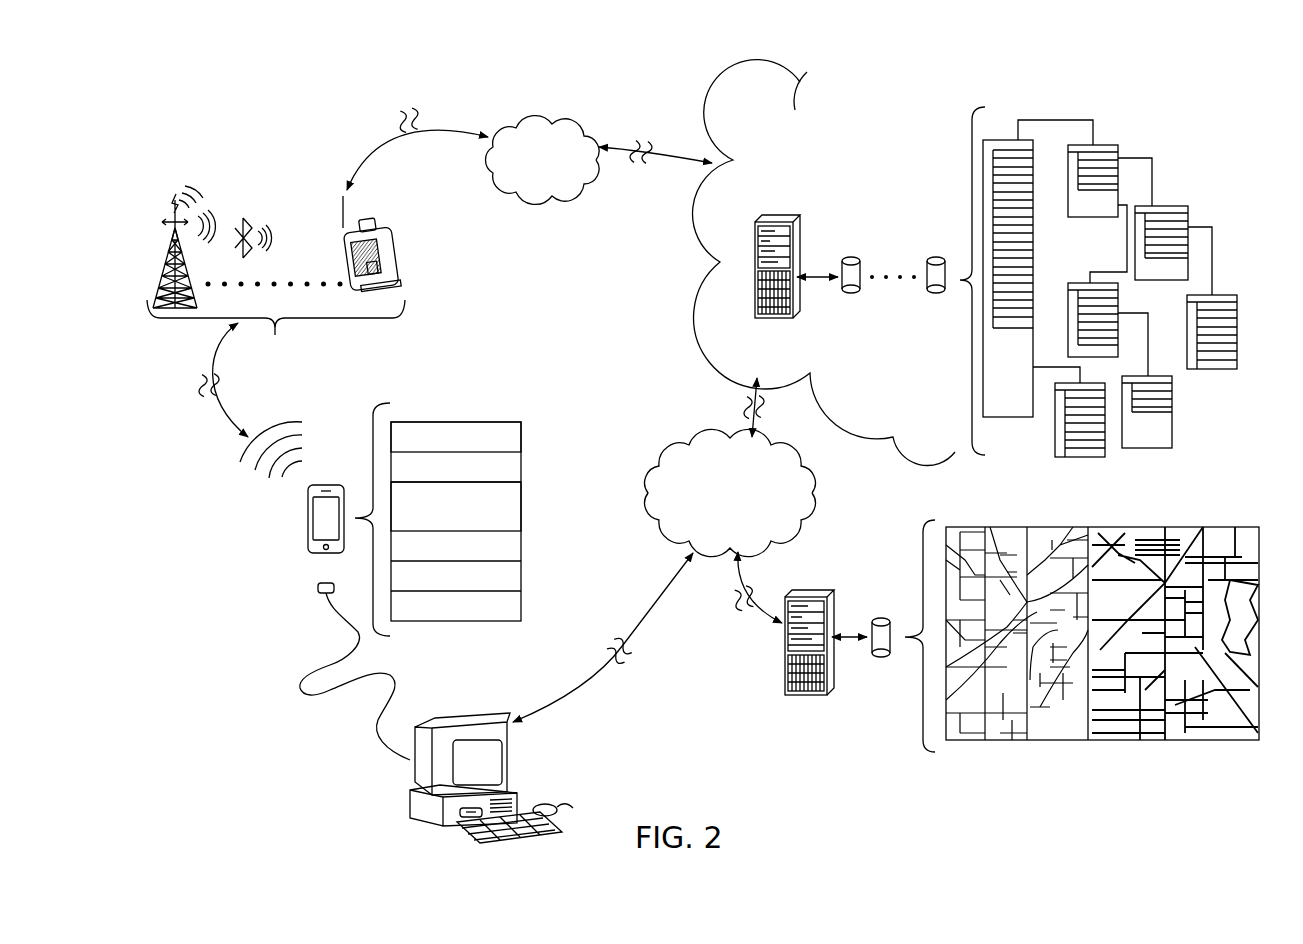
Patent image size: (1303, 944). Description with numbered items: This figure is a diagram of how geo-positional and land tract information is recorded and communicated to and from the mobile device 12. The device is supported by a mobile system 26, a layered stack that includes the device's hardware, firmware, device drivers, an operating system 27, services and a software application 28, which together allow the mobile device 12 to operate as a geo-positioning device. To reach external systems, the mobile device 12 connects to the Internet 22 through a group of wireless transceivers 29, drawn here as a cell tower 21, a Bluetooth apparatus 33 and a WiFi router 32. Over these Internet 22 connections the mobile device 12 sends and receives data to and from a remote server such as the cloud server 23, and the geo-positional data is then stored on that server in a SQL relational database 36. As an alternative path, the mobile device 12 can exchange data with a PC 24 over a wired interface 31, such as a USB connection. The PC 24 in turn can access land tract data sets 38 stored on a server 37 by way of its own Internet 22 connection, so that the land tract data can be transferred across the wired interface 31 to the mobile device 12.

The mobile device 12 is at (305, 525).
The cell tower 21 is at (163, 262).
The Internet 22 is at (543, 197).
The cloud server 23 is at (692, 238).
The PC 24 is at (406, 768).
The mobile system 26 is at (483, 519).
The operating system 27 is at (516, 512).
The software application 28 is at (516, 440).
The wireless transceivers 29 is at (138, 289).
The wired interface 31 is at (313, 672).
The WiFi router 32 is at (398, 252).
The Bluetooth apparatus 33 is at (247, 218).
The SQL relational database 36 is at (940, 149).
The server 37 is at (782, 648).
The land tract data sets 38 is at (912, 686).